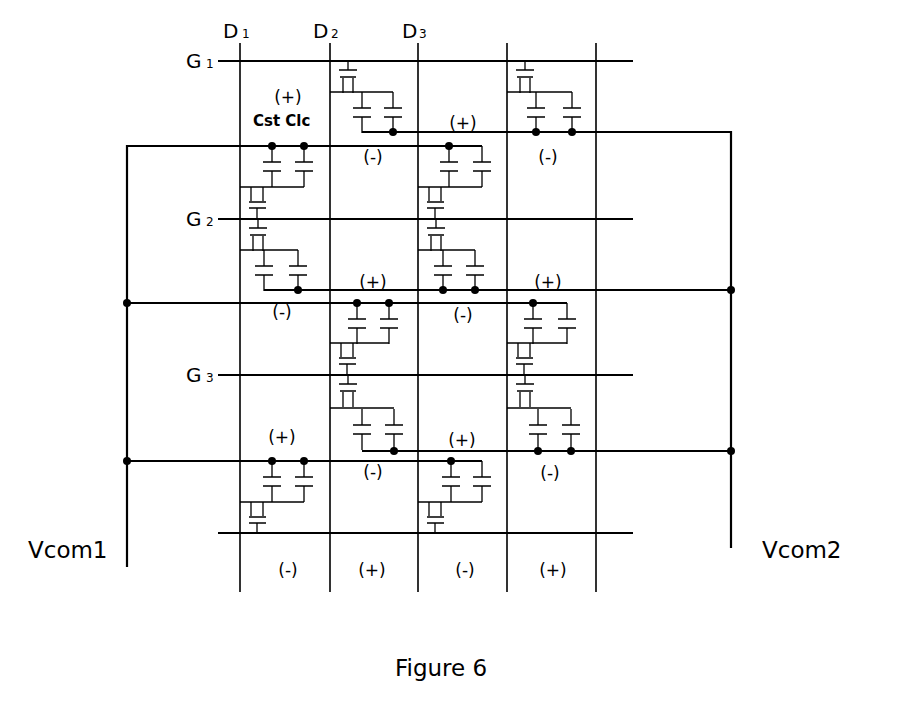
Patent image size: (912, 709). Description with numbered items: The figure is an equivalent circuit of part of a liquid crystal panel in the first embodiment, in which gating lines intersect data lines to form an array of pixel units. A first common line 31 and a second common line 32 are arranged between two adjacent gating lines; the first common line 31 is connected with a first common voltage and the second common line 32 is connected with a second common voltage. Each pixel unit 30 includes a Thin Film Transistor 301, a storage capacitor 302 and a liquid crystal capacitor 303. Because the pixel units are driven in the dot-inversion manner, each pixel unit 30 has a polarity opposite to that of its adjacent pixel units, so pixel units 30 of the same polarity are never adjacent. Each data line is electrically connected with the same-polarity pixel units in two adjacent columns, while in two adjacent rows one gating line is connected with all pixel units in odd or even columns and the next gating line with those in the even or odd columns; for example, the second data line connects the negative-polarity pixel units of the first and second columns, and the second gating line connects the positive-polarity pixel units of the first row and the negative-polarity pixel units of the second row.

The pixel unit 30 is at (275, 160).
The Thin Film Transistor 301 is at (253, 205).
The storage capacitor 302 is at (258, 165).
The liquid crystal capacitor 303 is at (316, 165).
The first common line 31 is at (155, 149).
The second common line 32 is at (695, 140).